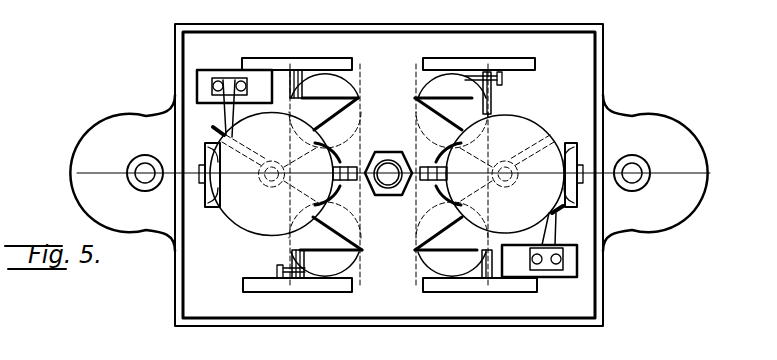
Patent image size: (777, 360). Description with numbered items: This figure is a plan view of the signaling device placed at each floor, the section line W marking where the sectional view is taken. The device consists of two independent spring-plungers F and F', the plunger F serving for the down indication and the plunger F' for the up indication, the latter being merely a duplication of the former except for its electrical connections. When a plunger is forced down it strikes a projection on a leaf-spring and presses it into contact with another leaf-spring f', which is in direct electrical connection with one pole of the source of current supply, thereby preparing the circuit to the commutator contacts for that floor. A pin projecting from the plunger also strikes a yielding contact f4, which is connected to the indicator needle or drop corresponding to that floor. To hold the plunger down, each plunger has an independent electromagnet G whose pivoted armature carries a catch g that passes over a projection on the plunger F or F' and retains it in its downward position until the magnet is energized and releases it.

The section line w w W is at (391, 174).
The spring-plunger F is at (267, 181).
The spring-plunger F' is at (507, 161).
The leaf-spring f' is at (391, 163).
The yielding contact f4 is at (225, 125).
The electromagnet G is at (345, 85).
The catch g is at (345, 165).